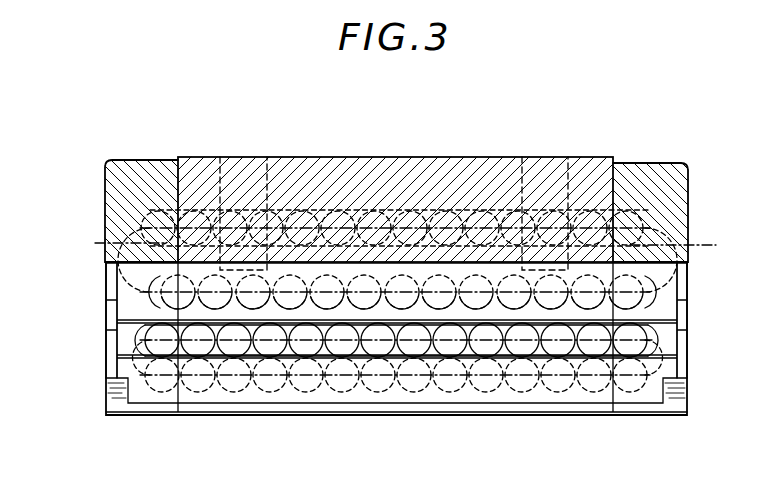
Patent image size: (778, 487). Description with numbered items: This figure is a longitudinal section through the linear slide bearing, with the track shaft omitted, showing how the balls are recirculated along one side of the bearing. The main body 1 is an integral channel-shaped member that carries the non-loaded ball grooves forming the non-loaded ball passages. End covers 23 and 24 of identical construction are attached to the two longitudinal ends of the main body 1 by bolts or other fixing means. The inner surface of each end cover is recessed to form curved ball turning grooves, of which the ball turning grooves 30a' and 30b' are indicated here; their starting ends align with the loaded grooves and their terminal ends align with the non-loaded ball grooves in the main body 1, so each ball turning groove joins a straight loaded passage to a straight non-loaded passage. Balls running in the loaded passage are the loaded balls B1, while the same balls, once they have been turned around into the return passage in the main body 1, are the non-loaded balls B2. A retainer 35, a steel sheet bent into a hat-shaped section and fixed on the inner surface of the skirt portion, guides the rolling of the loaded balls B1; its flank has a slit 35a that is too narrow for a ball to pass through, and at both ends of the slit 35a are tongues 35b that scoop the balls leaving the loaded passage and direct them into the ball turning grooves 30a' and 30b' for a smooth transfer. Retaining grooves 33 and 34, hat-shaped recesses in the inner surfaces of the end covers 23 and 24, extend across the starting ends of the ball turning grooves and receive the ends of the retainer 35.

The main body 1 is at (378, 153).
The end cover 23 is at (140, 157).
The end cover 24 is at (682, 160).
The loaded balls B1 is at (337, 283).
The non-loaded balls B2 is at (320, 226).
The retaining groove 33 is at (120, 319).
The retaining groove 34 is at (672, 326).
The retainer 35 is at (128, 337).
The slit 35a is at (457, 276).
The tongue 35b is at (160, 297).
The ball turning groove 30a' is at (105, 244).
The ball turning groove 30b' is at (696, 246).